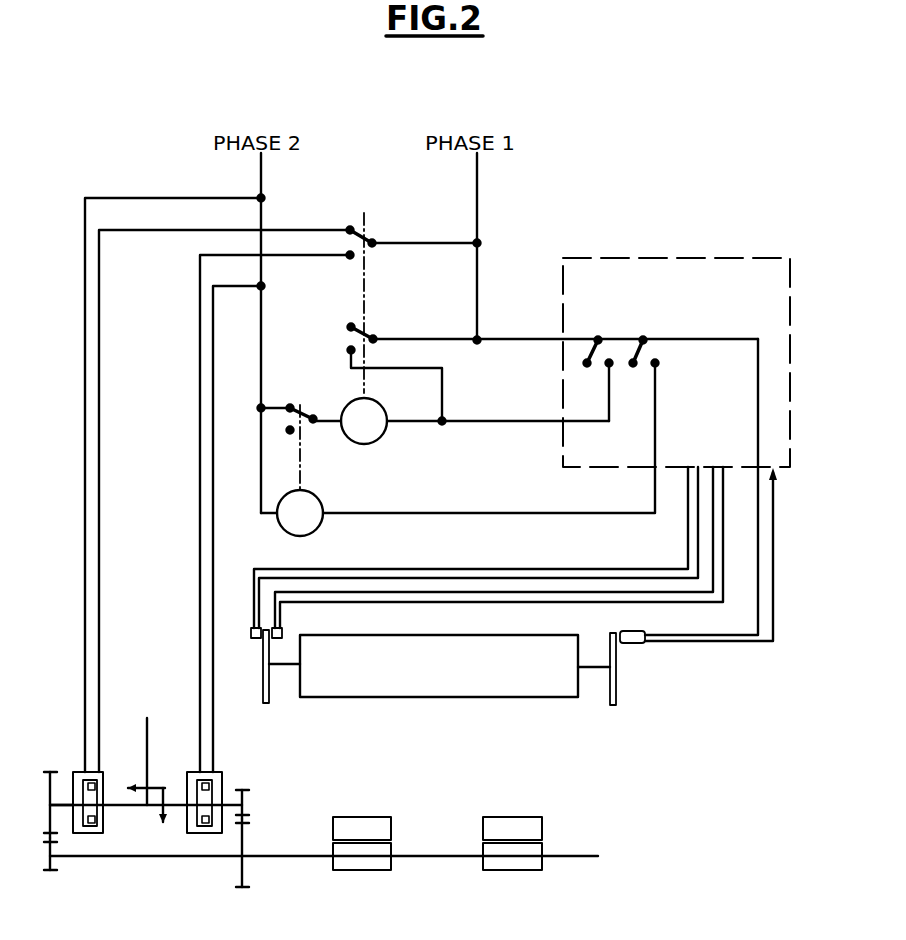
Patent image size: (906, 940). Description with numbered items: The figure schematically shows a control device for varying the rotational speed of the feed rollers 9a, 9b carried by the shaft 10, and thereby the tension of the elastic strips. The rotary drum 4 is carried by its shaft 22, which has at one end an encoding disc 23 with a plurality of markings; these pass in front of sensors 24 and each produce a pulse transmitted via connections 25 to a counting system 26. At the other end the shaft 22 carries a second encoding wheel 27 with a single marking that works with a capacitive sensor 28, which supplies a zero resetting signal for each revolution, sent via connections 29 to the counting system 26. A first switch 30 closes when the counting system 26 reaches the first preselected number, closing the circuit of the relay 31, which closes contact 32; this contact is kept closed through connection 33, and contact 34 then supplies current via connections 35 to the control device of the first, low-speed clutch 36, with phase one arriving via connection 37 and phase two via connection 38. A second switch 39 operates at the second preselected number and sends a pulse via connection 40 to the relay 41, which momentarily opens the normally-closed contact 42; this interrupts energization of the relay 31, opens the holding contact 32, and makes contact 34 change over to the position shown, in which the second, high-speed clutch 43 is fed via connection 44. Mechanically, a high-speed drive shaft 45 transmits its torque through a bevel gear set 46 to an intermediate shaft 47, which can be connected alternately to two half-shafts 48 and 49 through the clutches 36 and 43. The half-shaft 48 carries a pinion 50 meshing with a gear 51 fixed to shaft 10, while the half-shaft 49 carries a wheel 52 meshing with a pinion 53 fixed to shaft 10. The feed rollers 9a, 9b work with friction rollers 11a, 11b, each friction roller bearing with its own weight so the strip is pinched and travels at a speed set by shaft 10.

The rotary drum 4 is at (452, 680).
The rotary feed roller 9a is at (356, 857).
The feed roller 9b is at (510, 857).
The shaft 10 is at (421, 856).
The friction roller 11a is at (350, 827).
The friction roller 11b is at (503, 827).
The shaft 22 is at (283, 668).
The encoding disc 23 is at (264, 690).
The sensors 24 is at (251, 633).
The connections 25 is at (495, 602).
The counting system 26 is at (673, 258).
The second encoding wheel 27 is at (615, 700).
The capacitive sensor 28 is at (633, 643).
The connections 29 is at (758, 585).
The first switch 30 is at (590, 346).
The relay 31 is at (372, 428).
The contact 32 is at (370, 334).
The connection 33 is at (442, 392).
The contact 34 is at (367, 240).
The connections 35 is at (200, 438).
The first clutch 36 is at (222, 774).
The connection 37 is at (420, 244).
The connection 38 is at (263, 240).
The second switch 39 is at (638, 346).
The connection 40 is at (473, 514).
The relay 41 is at (308, 512).
The normally-closed contact 42 is at (300, 412).
The second clutch 43 is at (103, 774).
The connection 44 is at (85, 438).
The high-speed drive shaft 45 is at (147, 732).
The bevel gear set 46 is at (155, 783).
The intermediate shaft 47 is at (116, 808).
The half-shaft 48 is at (246, 793).
The half-shaft 49 is at (62, 805).
The pinion 50 is at (250, 822).
The gear 51 is at (250, 870).
The wheel 52 is at (44, 772).
The pinion 53 is at (54, 864).